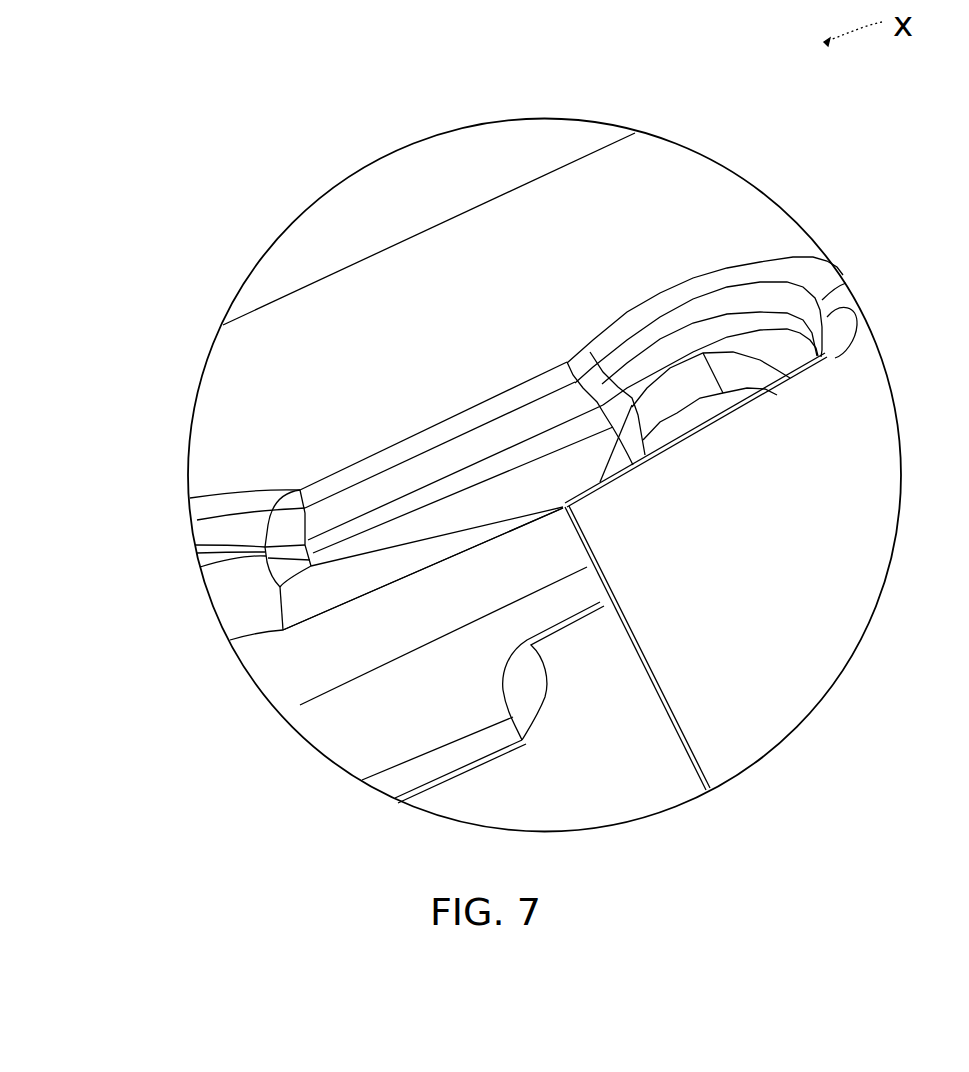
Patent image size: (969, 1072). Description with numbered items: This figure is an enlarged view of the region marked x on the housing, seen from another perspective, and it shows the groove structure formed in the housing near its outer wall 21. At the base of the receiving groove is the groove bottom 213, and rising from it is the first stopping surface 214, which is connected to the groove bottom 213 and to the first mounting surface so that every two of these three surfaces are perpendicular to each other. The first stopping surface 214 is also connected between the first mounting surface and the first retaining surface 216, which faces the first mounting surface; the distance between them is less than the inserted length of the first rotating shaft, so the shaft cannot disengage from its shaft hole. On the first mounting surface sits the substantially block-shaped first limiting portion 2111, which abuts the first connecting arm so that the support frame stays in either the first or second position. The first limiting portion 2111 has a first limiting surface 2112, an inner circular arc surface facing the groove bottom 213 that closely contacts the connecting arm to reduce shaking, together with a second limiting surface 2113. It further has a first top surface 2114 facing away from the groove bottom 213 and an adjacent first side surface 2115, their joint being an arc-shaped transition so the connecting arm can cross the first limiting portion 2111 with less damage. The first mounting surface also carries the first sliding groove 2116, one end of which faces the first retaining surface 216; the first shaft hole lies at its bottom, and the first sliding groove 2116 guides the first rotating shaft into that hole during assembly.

The outer wall 21 is at (347, 358).
The groove bottom 213 is at (342, 745).
The first stopping surface 214 is at (818, 357).
The first retaining surface 216 is at (658, 449).
The first limiting portion 2111 is at (293, 515).
The first limiting surface 2112 is at (317, 587).
The second limiting surface 2113 is at (665, 385).
The first top surface 2114 is at (318, 459).
The first side surface 2115 is at (510, 483).
The first sliding groove 2116 is at (332, 655).